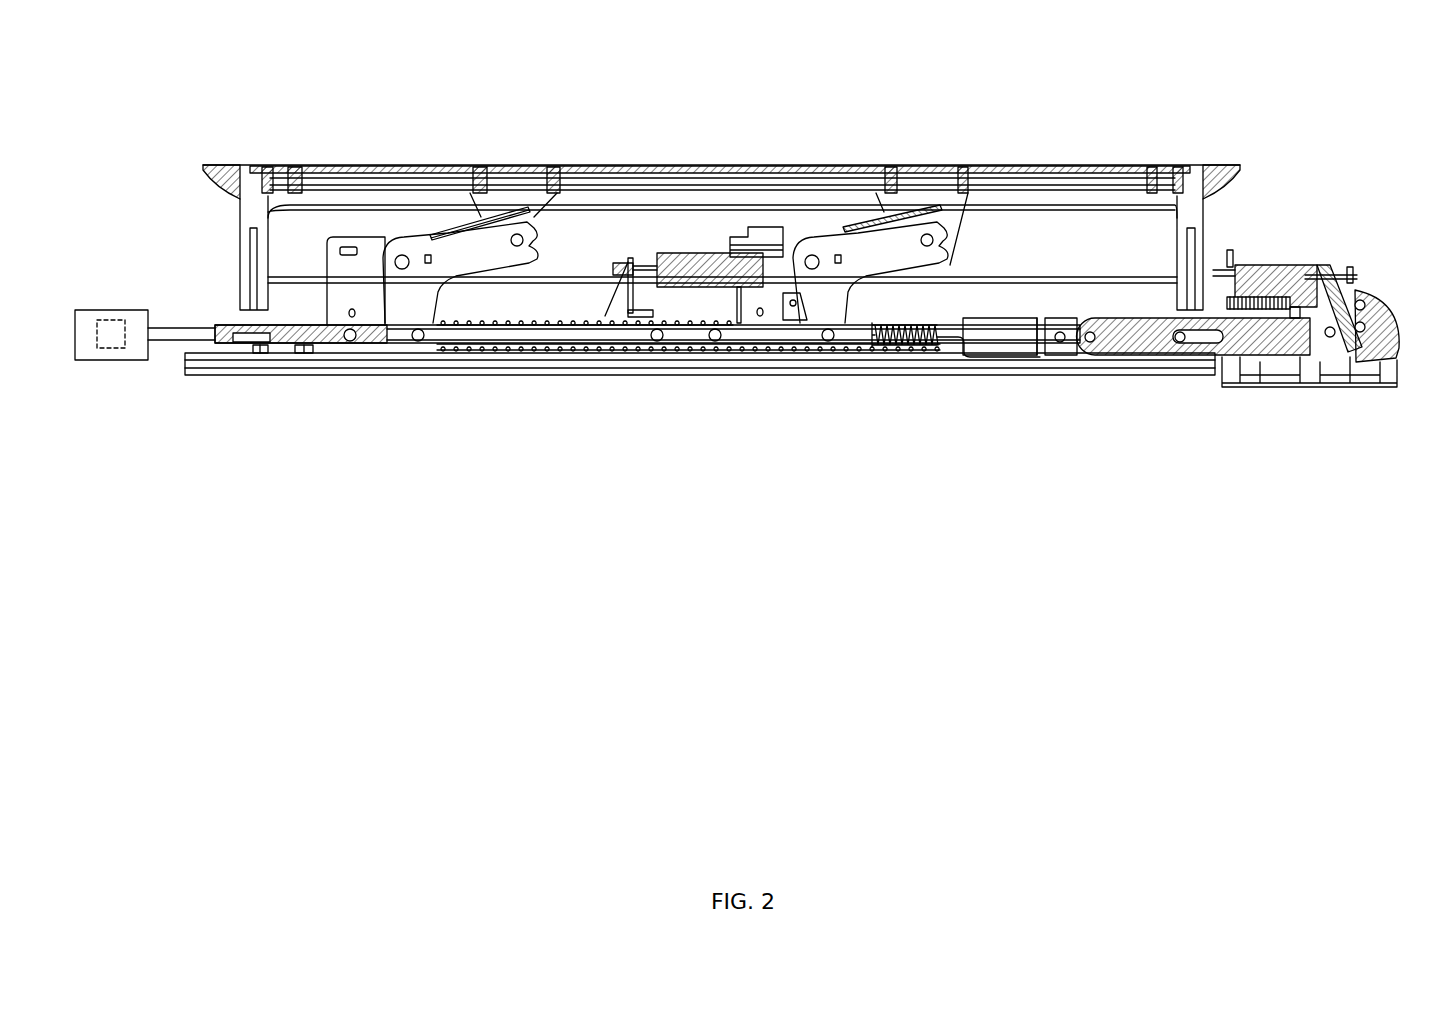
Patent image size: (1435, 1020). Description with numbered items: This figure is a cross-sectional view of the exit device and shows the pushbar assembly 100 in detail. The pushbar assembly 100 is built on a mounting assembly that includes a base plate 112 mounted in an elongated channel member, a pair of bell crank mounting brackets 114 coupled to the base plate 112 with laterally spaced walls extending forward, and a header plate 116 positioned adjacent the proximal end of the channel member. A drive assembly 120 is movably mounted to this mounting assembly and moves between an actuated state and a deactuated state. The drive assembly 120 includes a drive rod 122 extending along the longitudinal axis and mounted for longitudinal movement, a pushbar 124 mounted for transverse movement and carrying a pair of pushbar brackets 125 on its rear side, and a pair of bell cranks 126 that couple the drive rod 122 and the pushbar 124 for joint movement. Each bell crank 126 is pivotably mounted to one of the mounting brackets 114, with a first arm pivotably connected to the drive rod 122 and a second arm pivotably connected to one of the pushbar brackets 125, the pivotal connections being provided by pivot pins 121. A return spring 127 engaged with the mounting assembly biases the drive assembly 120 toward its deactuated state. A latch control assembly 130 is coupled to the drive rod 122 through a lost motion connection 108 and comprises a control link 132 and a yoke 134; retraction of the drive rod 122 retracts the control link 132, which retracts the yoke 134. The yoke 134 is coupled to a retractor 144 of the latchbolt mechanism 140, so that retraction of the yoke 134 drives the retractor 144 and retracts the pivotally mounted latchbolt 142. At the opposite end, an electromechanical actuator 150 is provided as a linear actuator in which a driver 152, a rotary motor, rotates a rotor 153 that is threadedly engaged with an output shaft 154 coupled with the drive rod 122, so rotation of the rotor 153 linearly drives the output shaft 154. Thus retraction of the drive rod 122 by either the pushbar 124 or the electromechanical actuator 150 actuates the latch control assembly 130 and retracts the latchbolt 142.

The pushbar assembly 100 is at (526, 70).
The lost motion connection 108 is at (905, 363).
The base plate 112 is at (290, 366).
The bell crank mounting brackets 114 is at (338, 250).
The header plate 116 is at (1225, 375).
The drive assembly 120 is at (212, 258).
The pivot pins 121 is at (536, 248).
The drive rod 122 is at (534, 350).
The pushbar 124 is at (732, 168).
The pushbar brackets 125 is at (568, 212).
The bell cranks 126 is at (832, 230).
The return spring 127 is at (636, 352).
The latch control assembly 130 is at (1082, 260).
The control link 132 is at (1000, 345).
The yoke 134 is at (1143, 346).
The latchbolt mechanism 140 is at (1373, 230).
The latchbolt 142 is at (1393, 322).
The retractor 144 is at (1320, 270).
The electromechanical actuator 150 is at (136, 275).
The driver 152 is at (100, 310).
The rotor 153 is at (114, 346).
The output shaft 154 is at (172, 345).